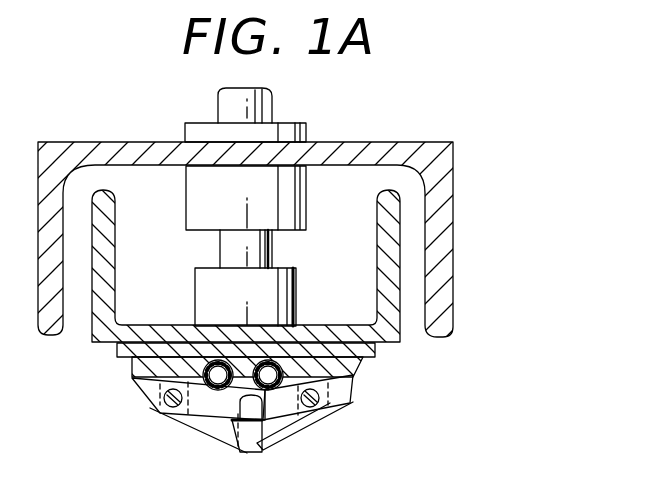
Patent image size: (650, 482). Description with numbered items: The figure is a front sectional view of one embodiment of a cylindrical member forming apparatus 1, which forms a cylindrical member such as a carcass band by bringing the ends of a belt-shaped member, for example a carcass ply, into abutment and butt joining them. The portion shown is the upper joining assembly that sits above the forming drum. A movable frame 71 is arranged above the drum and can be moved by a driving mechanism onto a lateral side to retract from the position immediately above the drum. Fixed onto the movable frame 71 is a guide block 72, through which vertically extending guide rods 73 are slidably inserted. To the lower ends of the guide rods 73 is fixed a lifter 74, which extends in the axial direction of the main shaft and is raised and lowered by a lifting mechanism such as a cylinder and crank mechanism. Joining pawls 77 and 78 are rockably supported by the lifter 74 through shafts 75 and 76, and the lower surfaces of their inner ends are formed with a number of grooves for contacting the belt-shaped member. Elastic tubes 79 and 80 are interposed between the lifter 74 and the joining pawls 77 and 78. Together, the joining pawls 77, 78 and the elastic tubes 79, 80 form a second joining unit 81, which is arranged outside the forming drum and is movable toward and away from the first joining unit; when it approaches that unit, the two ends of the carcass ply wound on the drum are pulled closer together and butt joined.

The cylindrical member forming apparatus 1 is at (274, 282).
The movable frame 71 is at (442, 160).
The guide block 72 is at (195, 122).
The guide rods 73 is at (227, 247).
The lifter 74 is at (387, 273).
The shaft 75 is at (163, 398).
The shaft 76 is at (323, 402).
The joining pawl 77 is at (210, 426).
The joining pawl 78 is at (290, 431).
The elastic tube 79 is at (183, 327).
The elastic tube 80 is at (316, 328).
The second joining unit 81 is at (383, 368).